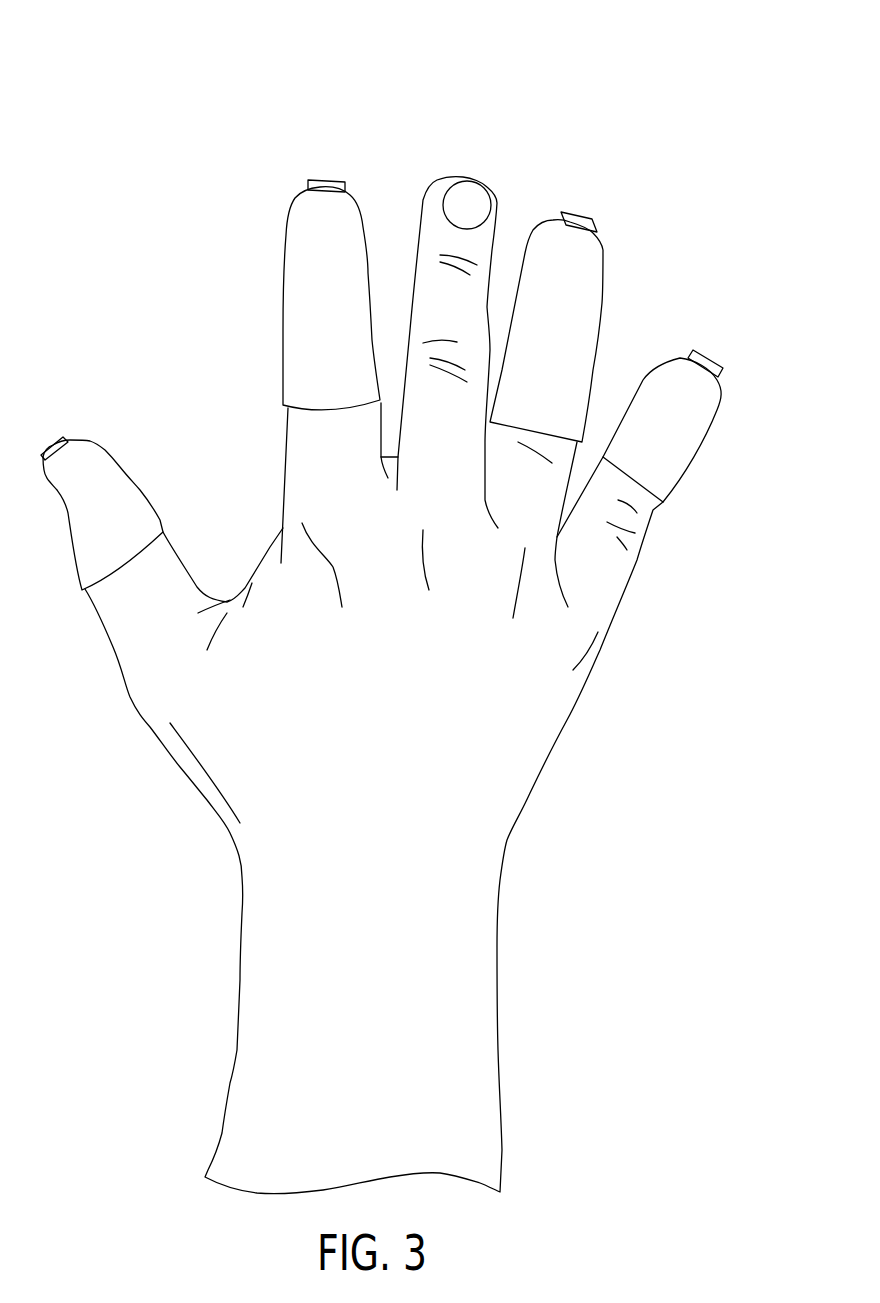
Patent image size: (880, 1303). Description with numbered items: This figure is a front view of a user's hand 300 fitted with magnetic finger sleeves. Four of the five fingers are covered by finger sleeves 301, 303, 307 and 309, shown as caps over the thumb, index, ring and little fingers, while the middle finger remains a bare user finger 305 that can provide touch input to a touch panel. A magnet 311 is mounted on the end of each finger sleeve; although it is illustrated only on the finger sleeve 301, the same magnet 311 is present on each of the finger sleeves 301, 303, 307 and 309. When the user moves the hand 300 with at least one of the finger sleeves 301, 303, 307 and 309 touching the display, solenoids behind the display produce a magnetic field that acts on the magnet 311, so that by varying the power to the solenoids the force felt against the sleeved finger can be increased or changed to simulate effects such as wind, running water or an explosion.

The hand 300 is at (692, 90).
The finger sleeve 301 is at (92, 440).
The finger sleeve 303 is at (358, 207).
The user finger 305 is at (495, 193).
The finger sleeve 307 is at (603, 233).
The finger sleeve 309 is at (677, 358).
The magnet 311 is at (48, 437).